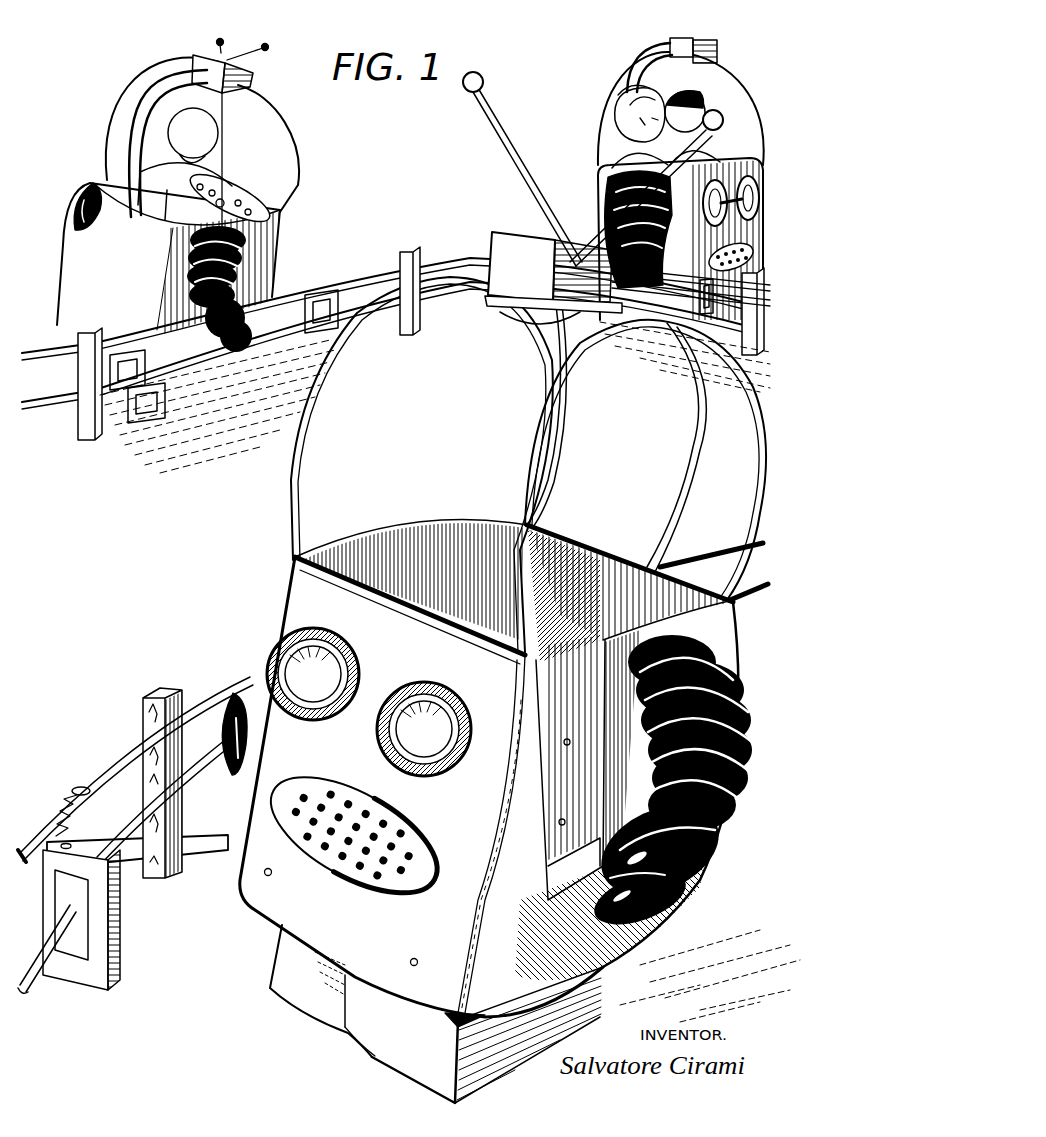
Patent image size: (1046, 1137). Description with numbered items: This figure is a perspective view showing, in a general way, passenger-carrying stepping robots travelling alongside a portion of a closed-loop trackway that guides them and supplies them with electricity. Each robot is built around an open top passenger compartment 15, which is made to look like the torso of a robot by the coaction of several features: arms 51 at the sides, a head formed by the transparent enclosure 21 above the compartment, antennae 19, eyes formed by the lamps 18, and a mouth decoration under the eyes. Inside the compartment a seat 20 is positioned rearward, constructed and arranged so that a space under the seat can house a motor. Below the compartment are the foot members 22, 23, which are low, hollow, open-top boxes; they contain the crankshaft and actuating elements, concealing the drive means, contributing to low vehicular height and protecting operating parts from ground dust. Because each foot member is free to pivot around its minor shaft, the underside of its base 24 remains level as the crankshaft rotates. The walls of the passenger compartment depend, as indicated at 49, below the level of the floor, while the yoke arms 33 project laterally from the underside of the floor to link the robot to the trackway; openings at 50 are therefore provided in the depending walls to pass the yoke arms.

The passenger compartment 15 is at (272, 586).
The lamps 18 is at (432, 689).
The antennae 19 is at (598, 248).
The seat 20 is at (560, 718).
The transparent enclosure 21 is at (318, 497).
The foot member 22 is at (303, 998).
The foot member 23 is at (440, 1070).
The base 24 is at (383, 1063).
The yoke arms 33 is at (198, 842).
The depending walls 49 is at (268, 910).
The openings 50 is at (226, 362).
The arms 51 is at (733, 818).